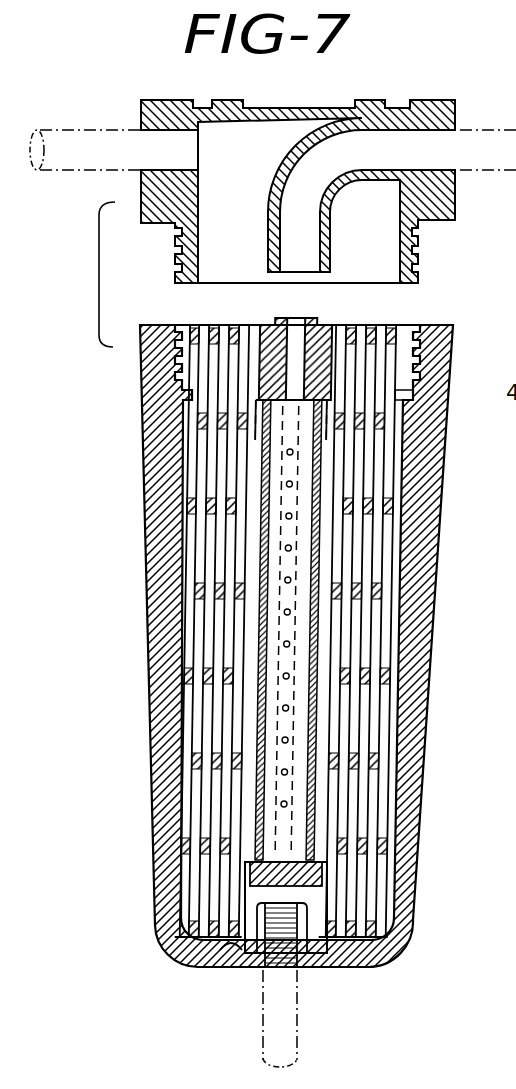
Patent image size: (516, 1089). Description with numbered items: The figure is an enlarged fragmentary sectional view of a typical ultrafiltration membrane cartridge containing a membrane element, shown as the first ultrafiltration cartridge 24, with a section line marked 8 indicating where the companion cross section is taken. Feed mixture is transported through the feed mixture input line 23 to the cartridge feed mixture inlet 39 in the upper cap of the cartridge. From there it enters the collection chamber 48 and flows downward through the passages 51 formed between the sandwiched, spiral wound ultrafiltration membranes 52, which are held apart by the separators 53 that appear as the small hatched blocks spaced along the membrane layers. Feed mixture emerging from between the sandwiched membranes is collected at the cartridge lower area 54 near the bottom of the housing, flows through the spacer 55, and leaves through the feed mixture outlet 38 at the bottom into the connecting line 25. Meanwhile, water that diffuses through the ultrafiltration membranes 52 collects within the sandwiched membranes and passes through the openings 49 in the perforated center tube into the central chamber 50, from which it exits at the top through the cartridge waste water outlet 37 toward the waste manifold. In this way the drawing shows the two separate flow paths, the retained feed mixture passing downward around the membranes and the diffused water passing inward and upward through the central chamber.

The feed mixture input line 23 is at (70, 128).
The cartridge feed mixture inlet 39 is at (142, 140).
The cartridge waste water outlet 37 is at (448, 140).
The collection chamber 48 is at (252, 168).
The first ultrafiltration cartridge 24 is at (143, 588).
The central chamber 50 is at (312, 460).
The openings 49 is at (285, 484).
The passages 51 is at (345, 557).
The ultrafiltration membranes 52 is at (340, 620).
The separators 53 is at (342, 698).
The feed mixture outlet 38 is at (293, 953).
The cartridge lower area 54 is at (343, 943).
The spacer 55 is at (230, 943).
The connecting line 25 is at (297, 1033).
The section line 8- 8 is at (102, 845).